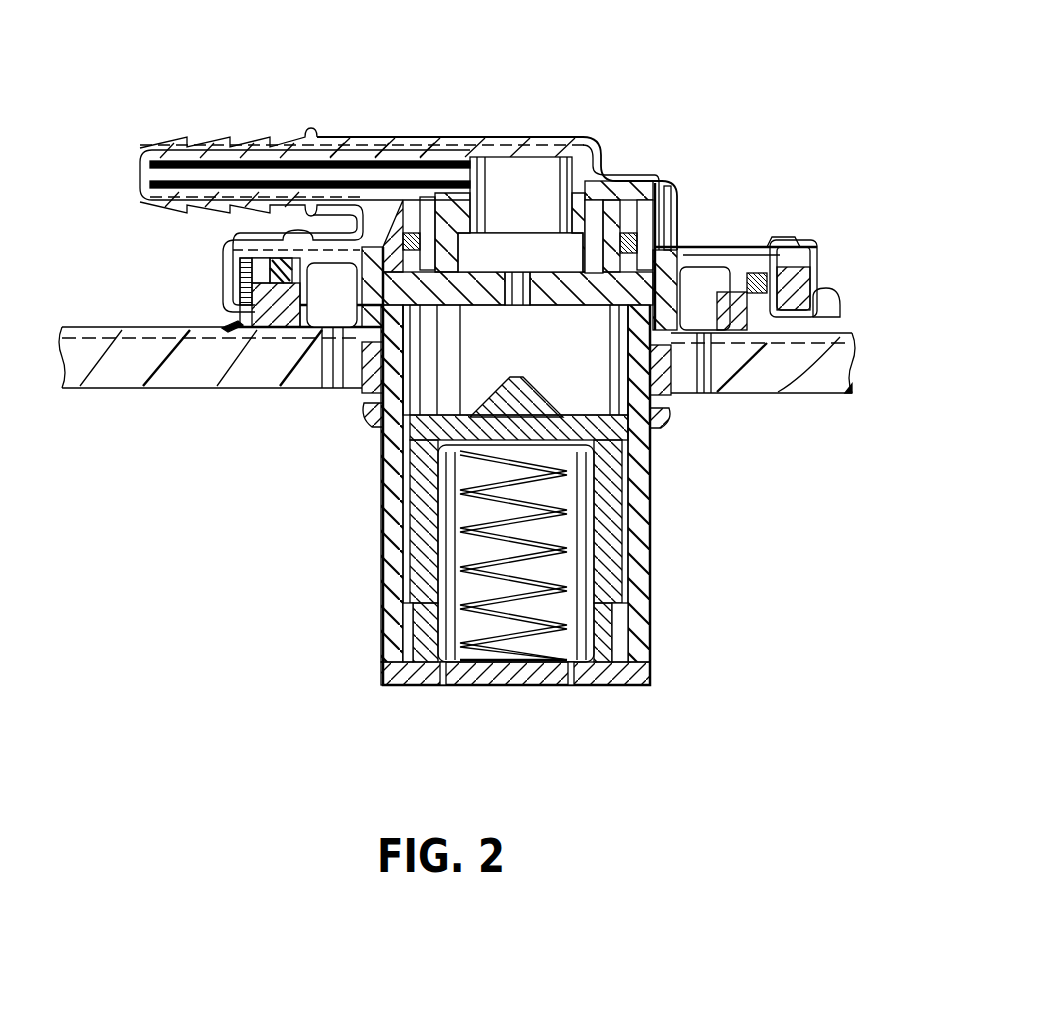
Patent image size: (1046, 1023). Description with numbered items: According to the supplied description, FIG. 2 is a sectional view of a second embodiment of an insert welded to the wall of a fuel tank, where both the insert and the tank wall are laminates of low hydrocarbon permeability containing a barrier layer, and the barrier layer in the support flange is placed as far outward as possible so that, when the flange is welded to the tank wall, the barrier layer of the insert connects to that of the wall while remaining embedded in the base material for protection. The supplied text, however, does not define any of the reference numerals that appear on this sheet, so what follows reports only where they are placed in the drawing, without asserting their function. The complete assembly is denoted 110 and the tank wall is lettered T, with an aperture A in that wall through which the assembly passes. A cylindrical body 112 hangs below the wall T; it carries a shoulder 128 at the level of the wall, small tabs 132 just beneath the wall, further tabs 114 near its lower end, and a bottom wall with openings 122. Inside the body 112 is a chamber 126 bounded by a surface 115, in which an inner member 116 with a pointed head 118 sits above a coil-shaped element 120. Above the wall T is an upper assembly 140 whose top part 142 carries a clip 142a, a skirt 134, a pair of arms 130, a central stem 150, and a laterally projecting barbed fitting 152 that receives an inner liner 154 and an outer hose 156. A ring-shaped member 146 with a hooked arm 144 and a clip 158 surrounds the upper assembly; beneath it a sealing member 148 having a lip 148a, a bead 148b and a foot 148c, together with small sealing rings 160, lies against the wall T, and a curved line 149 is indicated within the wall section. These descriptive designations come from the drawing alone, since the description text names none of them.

The vent valve assembly 110 is at (516, 96).
The housing 112 is at (660, 505).
The snap tabs 114 is at (640, 647).
The inner cylindrical surface 115 is at (494, 371).
The piston 116 is at (588, 424).
The piston head 118 is at (520, 374).
The spring 120 is at (560, 545).
The openings in bottom wall 122 is at (648, 672).
The chamber 126 is at (527, 285).
The shoulder 128 is at (362, 392).
The snap arms 130 is at (440, 232).
The snap tabs 132 is at (368, 412).
The cover skirt 134 is at (672, 210).
The cover assembly 140 is at (696, 142).
The cover 142 is at (578, 240).
The cover clip 142a is at (676, 182).
The retaining arm 144 is at (265, 240).
The retaining ring 146 is at (202, 249).
The gasket 148 is at (238, 316).
The gasket lip 148a is at (240, 260).
The gasket bead 148b is at (238, 286).
The gasket foot 148c is at (227, 333).
The tank wall weld 149 is at (777, 388).
The vent stem 150 is at (540, 202).
The hose nipple 152 is at (183, 135).
The hose liner 154 is at (152, 160).
The hose 156 is at (152, 174).
The retaining clip 158 is at (770, 255).
The O-ring seal 160 is at (300, 312).
The tank wall T is at (790, 383).
The aperture A is at (690, 372).